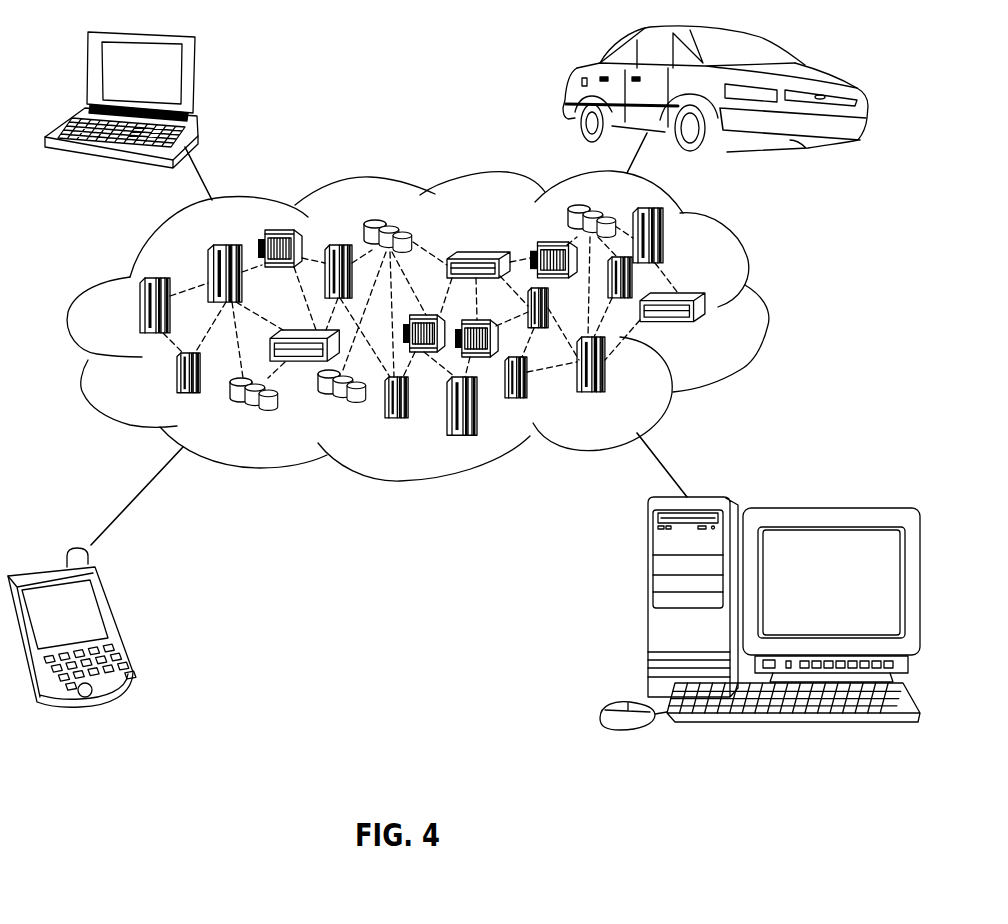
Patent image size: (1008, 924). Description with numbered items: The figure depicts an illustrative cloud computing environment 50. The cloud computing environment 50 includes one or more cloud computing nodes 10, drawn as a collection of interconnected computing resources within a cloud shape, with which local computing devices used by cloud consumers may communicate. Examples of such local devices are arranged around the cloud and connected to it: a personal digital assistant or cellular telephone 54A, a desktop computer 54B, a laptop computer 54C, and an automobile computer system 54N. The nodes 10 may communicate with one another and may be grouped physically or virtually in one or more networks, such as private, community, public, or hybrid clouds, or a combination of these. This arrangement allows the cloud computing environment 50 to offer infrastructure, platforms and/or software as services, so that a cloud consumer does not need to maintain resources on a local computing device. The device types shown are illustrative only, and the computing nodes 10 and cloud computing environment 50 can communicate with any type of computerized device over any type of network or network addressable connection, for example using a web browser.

The cloud computing nodes 10 is at (722, 327).
The cloud computing environment 50 is at (748, 268).
The personal digital assistant (PDA) or cellular telephone 54A is at (117, 623).
The desktop computer 54B is at (842, 508).
The laptop computer 54C is at (195, 72).
The automobile computer system 54N is at (573, 82).